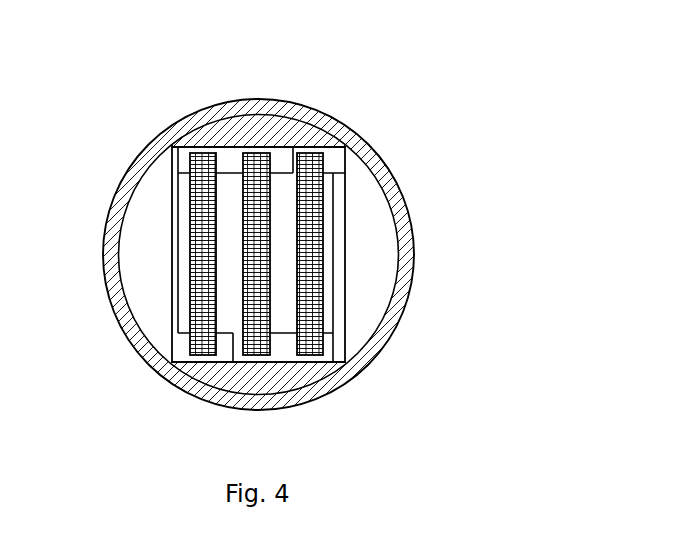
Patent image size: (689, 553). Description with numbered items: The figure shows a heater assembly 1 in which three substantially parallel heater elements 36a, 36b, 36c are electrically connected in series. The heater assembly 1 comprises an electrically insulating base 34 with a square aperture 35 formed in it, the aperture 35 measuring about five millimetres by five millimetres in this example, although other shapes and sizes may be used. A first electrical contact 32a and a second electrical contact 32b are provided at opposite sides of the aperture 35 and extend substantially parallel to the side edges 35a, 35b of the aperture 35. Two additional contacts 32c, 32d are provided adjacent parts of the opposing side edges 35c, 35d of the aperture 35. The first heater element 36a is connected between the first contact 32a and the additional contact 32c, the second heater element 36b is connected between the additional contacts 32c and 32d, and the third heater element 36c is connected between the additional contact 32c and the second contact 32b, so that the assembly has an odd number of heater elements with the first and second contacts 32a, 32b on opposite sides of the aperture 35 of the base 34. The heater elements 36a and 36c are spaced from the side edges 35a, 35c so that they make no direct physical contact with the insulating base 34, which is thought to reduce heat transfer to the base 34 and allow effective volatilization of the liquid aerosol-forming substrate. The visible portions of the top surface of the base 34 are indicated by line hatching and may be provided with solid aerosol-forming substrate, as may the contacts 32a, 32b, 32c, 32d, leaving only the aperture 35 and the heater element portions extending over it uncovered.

The heater assembly 1 is at (121, 146).
The first electrical contact 32a is at (138, 272).
The second electrical contact 32b is at (376, 217).
The additional contact portion 32c is at (247, 146).
The additional contact portion 32d is at (296, 364).
The electrically insulating base 34 is at (309, 117).
The aperture 35 is at (259, 245).
The side edge of the aperture 35a is at (177, 213).
The side edge of the aperture 35b is at (338, 273).
The side edge of the aperture 35c is at (274, 173).
The side edge of the aperture 35d is at (233, 335).
The first heater element 36a is at (196, 355).
The second heater element 36b is at (262, 355).
The third heater element 36c is at (318, 355).